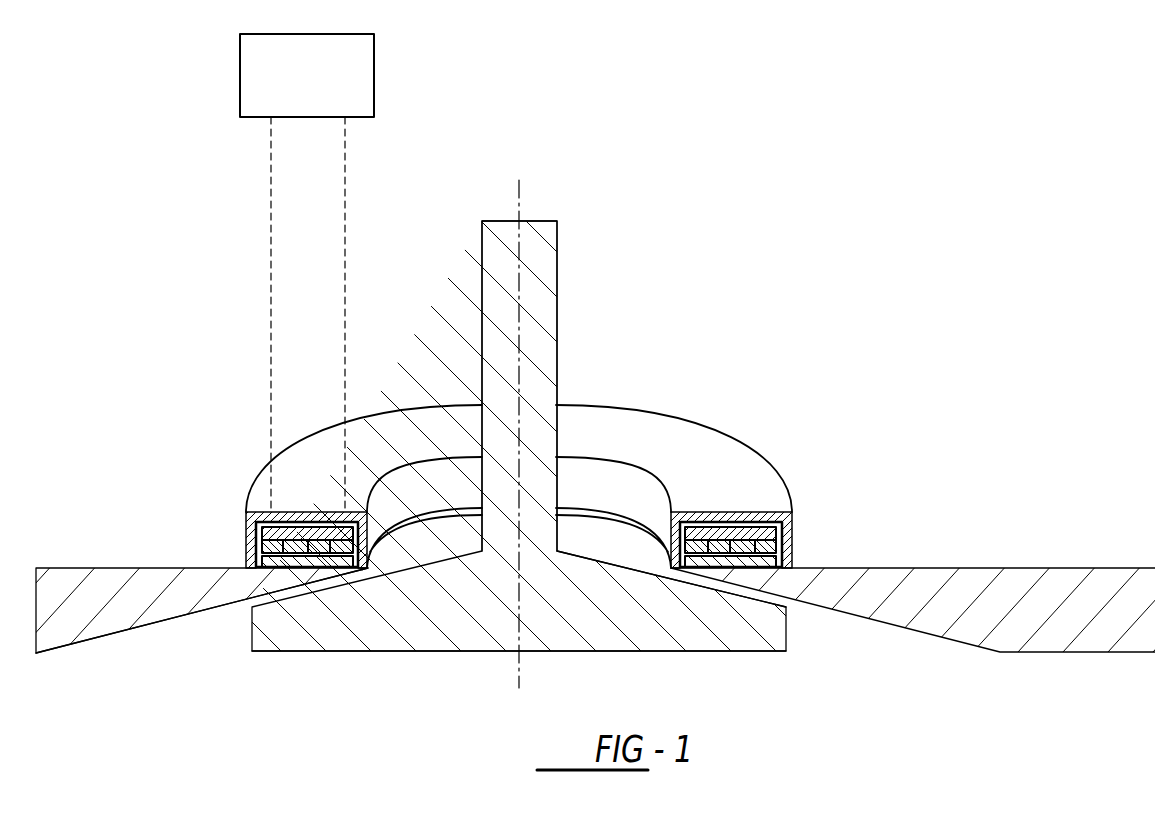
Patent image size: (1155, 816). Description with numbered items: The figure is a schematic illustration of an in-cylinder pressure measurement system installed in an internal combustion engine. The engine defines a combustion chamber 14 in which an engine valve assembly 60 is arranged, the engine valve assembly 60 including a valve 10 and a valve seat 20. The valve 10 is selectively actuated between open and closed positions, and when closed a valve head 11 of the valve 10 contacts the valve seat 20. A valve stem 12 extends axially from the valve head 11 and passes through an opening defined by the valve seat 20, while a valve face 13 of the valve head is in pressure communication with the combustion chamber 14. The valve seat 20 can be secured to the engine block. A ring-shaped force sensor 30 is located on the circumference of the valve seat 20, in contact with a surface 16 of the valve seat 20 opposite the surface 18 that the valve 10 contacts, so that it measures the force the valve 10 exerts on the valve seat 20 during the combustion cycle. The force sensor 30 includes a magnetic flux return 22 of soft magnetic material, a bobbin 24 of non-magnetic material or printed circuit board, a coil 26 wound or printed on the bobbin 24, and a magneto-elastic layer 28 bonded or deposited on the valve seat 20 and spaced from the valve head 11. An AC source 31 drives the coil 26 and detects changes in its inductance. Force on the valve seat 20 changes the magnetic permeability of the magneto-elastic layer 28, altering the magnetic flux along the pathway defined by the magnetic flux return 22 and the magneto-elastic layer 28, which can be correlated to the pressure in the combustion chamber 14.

The valve 10 is at (473, 682).
The valve head 11 is at (710, 622).
The valve stem 12 is at (535, 300).
The valve face 13 is at (652, 652).
The combustion chamber 14 is at (333, 730).
The surface 16 is at (185, 566).
The surface 18 is at (198, 612).
The valve seat 20 is at (1048, 632).
The magnetic flux return 22 is at (717, 515).
The bobbin 24 is at (762, 522).
The coil 26 is at (770, 545).
The magneto-elastic layer 28 is at (770, 560).
The force sensor 30 is at (235, 480).
The AC source 31 is at (355, 84).
The engine valve assembly 60 is at (252, 689).